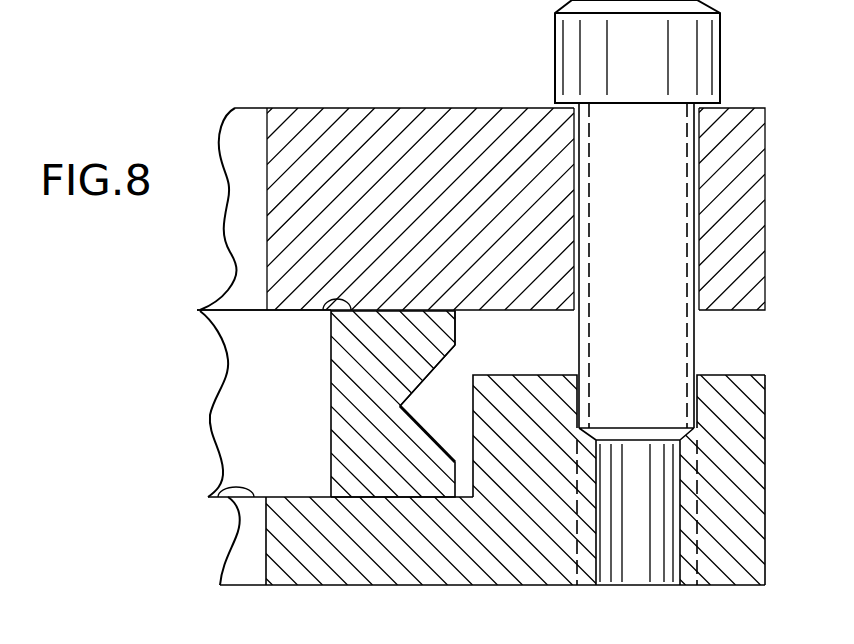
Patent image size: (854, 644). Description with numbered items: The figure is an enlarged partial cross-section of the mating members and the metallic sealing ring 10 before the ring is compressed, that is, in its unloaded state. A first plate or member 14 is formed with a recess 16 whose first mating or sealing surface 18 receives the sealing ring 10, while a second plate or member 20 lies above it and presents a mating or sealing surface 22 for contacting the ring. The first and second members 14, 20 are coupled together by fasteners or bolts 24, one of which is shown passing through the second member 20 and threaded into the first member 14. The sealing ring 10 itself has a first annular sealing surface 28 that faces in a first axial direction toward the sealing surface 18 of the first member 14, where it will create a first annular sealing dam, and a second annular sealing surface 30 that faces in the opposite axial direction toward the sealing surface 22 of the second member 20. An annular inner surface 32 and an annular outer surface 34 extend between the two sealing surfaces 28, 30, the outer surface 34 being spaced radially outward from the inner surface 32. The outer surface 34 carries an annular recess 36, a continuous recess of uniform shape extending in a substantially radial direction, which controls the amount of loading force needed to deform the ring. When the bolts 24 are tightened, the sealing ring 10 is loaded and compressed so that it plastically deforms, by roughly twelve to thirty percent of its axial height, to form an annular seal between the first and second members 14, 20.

The metallic sealing ring 10 is at (207, 437).
The first plate or member 14 is at (317, 585).
The recess 16 is at (474, 430).
The first mating or sealing surface 18 is at (213, 500).
The second plate or member 20 is at (325, 109).
The mating or sealing surface 22 is at (277, 313).
The fasteners or bolts 24 is at (555, 45).
The first annular sealing surface 28 is at (298, 497).
The second annular sealing surface 30 is at (325, 313).
The annular inner surface 32 is at (318, 442).
The annular outer surface 34 is at (457, 327).
The annular recess 36 is at (418, 393).